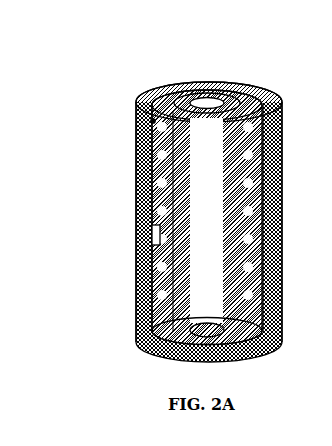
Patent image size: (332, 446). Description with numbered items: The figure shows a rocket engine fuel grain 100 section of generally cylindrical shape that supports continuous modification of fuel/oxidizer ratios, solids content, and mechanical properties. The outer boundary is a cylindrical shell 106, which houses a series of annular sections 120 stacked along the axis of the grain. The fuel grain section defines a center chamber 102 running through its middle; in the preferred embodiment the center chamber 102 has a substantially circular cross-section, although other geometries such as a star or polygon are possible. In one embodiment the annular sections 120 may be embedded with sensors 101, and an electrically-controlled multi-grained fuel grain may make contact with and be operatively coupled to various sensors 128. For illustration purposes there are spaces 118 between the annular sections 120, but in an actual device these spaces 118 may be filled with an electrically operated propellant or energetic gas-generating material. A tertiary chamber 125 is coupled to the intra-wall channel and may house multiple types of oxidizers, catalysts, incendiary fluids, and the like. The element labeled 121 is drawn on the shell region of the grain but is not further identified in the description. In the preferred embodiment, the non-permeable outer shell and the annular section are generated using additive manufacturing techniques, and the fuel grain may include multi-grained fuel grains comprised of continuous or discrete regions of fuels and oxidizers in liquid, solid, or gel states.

The fuel grain 100 is at (137, 93).
The sensors 101 is at (182, 186).
The center chamber 102 is at (211, 102).
The cylindrical shell 106 is at (135, 283).
The spaces 118 is at (160, 209).
The annular sections 120 is at (173, 166).
The inner wall 121 is at (135, 137).
The tertiary chamber 125 is at (152, 233).
The sensors 128 is at (153, 121).